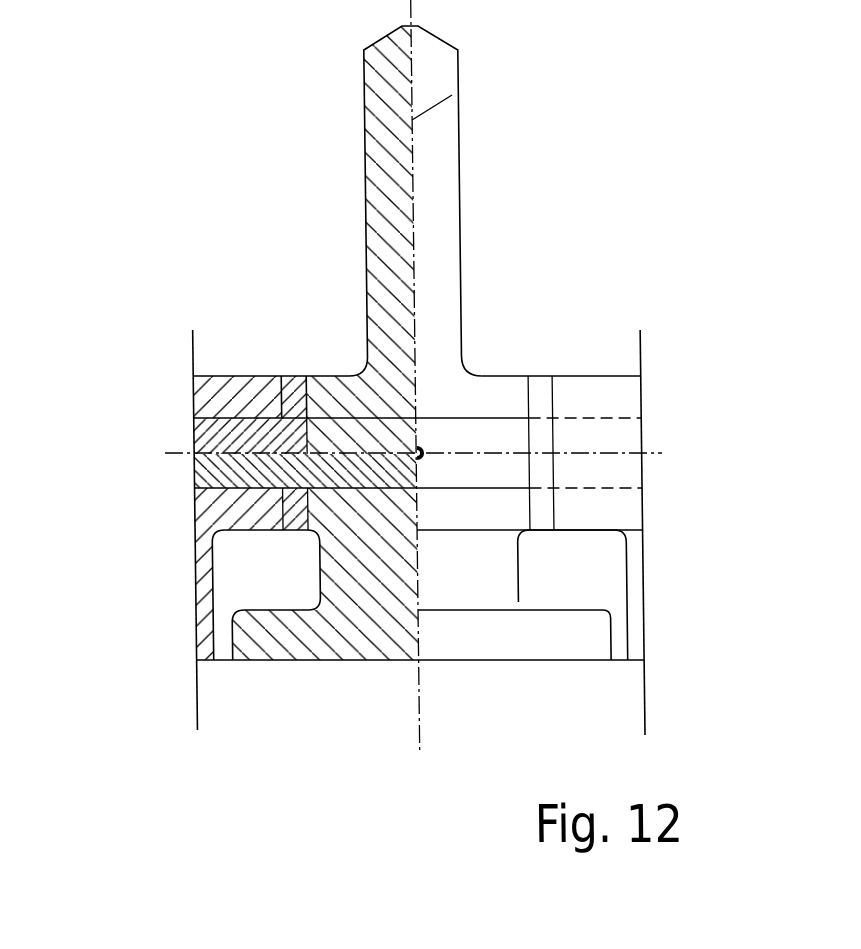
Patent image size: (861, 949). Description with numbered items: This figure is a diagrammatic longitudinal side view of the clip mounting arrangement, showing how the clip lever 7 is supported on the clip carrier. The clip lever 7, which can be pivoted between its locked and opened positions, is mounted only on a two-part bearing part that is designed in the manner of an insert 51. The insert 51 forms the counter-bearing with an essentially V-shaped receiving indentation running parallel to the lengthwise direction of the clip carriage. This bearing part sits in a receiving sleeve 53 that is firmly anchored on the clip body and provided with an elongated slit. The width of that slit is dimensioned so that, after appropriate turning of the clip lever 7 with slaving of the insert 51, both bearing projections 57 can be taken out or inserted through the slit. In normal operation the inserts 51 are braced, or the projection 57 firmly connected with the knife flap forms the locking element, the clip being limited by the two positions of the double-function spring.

The clip lever 7 is at (442, 225).
The receiving sleeve 53 is at (245, 386).
The insert 51 is at (217, 437).
The bearing projection 57 is at (211, 475).